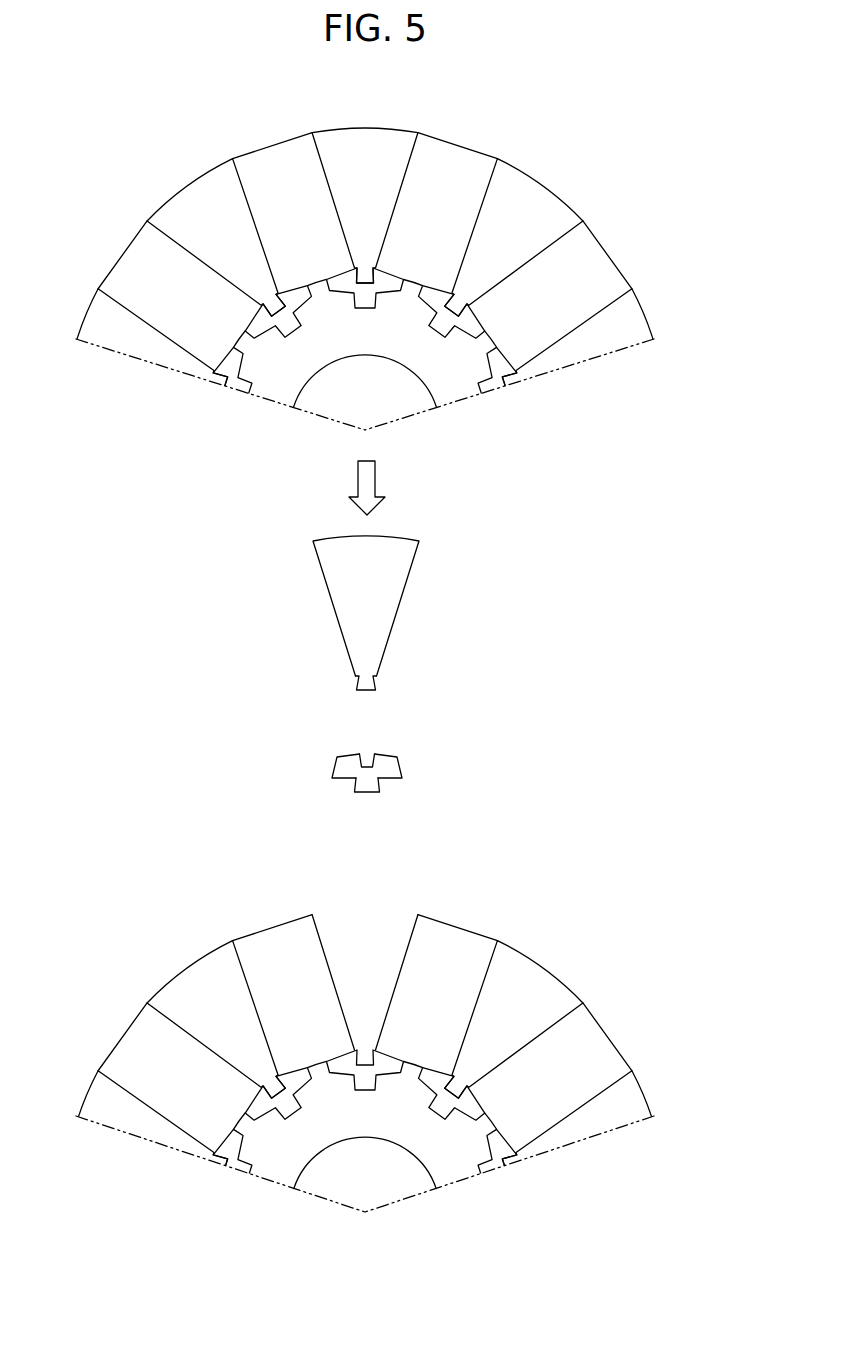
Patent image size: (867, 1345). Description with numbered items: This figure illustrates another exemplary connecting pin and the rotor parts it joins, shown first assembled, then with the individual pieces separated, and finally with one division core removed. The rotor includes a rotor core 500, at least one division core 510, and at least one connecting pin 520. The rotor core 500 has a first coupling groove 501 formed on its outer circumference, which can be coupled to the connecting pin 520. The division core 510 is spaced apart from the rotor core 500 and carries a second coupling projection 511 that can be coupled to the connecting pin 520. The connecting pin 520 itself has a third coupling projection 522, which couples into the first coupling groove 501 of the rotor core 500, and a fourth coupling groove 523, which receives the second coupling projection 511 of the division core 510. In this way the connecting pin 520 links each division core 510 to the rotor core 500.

The rotor core 500 is at (460, 388).
The first coupling groove 501 is at (367, 1080).
The division core 510 is at (364, 672).
The second coupling projection 511 is at (379, 682).
The connecting pin 520 is at (365, 643).
The third coupling projection 522 is at (373, 793).
The fourth coupling groove 523 is at (366, 759).